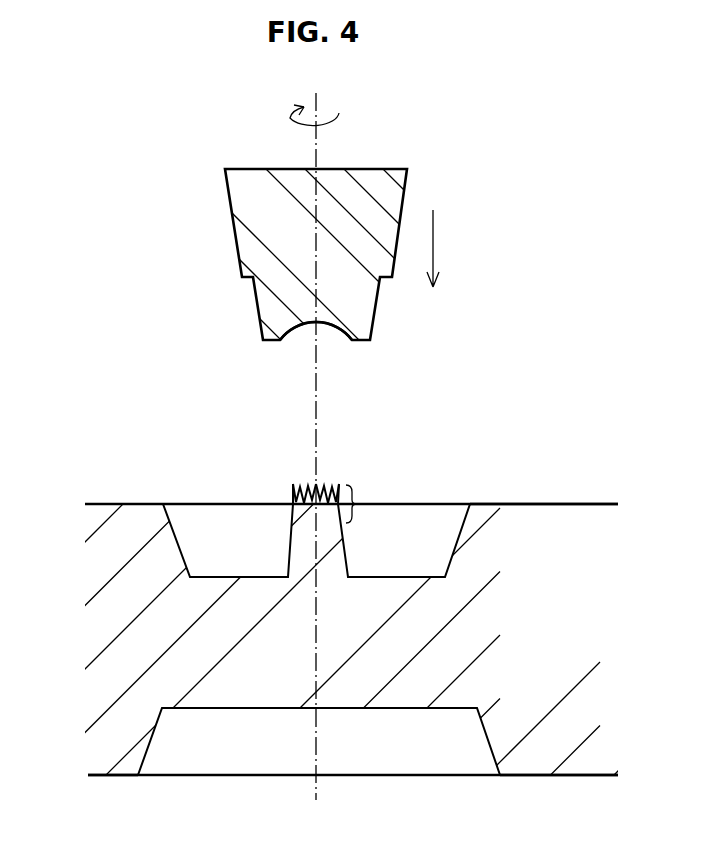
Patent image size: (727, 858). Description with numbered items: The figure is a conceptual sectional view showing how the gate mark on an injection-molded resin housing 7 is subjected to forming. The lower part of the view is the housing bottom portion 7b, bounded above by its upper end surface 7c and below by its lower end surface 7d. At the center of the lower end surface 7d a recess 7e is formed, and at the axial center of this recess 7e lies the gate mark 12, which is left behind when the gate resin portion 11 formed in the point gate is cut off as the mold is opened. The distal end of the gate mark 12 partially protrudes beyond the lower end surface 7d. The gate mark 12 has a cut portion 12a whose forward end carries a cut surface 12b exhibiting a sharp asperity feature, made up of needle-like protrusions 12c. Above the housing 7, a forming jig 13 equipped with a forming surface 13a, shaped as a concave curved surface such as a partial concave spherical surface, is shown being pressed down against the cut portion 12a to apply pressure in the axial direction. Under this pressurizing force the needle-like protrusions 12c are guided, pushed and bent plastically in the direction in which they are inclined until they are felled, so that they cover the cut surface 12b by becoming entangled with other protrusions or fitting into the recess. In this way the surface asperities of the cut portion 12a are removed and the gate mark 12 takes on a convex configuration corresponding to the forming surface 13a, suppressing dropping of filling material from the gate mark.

The housing 7 is at (93, 480).
The bottom portion 7b is at (233, 672).
The upper end surface 7c is at (265, 708).
The lower end surface 7d is at (552, 504).
The recess 7e is at (218, 562).
The gate resin portion 11 is at (387, 508).
The gate mark 12 is at (342, 477).
The cut portion 12a is at (372, 491).
The cut surface 12b is at (308, 490).
The needle-like protrusions 12c is at (333, 490).
The forming jig 13 is at (272, 237).
The forming surface 13a is at (330, 330).